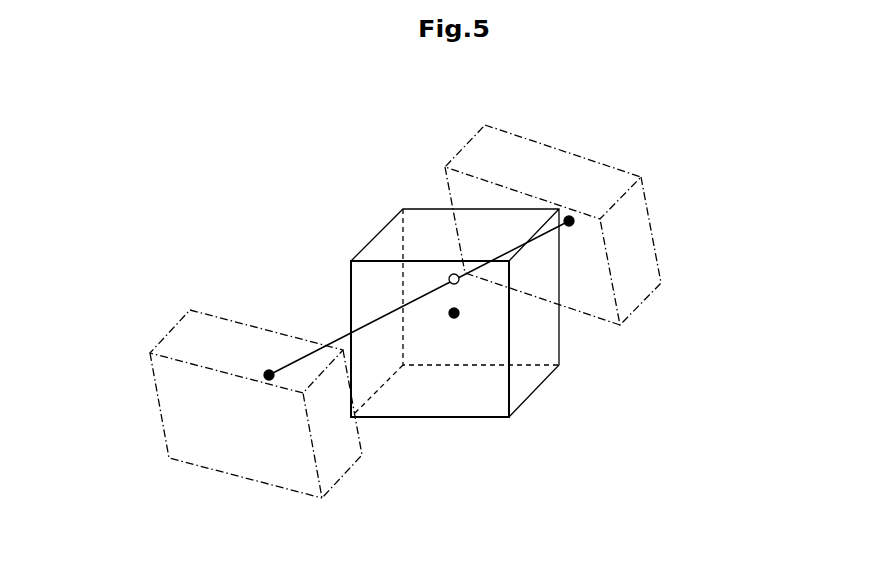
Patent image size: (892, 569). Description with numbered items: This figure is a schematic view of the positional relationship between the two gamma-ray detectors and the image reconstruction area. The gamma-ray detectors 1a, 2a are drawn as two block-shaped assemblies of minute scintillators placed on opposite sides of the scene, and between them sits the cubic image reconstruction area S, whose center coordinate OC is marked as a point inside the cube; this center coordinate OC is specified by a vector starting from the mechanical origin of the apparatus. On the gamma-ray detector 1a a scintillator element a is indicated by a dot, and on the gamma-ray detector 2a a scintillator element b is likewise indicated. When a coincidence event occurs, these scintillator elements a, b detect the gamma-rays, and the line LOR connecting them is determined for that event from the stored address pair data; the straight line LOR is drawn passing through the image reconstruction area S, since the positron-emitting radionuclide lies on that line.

The gamma-ray detector 1a is at (597, 196).
The gamma-ray detector 2a is at (287, 355).
The image reconstruction area S is at (373, 238).
The line of response LOR is at (342, 333).
The scintillator element a is at (573, 226).
The scintillator element b is at (268, 381).
The center coordinate OC is at (453, 319).